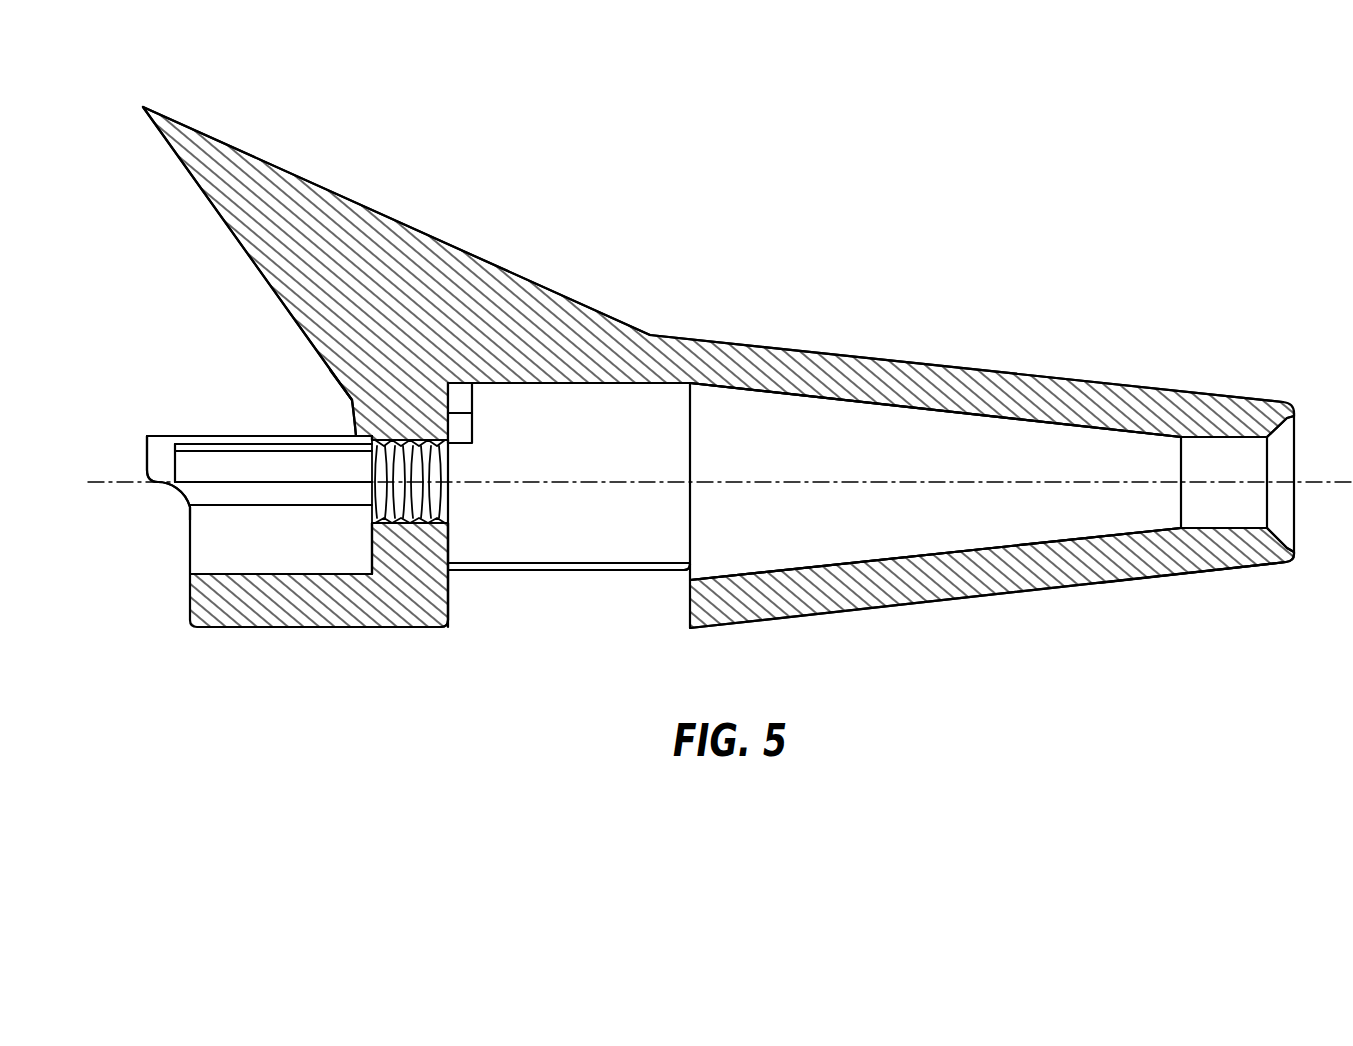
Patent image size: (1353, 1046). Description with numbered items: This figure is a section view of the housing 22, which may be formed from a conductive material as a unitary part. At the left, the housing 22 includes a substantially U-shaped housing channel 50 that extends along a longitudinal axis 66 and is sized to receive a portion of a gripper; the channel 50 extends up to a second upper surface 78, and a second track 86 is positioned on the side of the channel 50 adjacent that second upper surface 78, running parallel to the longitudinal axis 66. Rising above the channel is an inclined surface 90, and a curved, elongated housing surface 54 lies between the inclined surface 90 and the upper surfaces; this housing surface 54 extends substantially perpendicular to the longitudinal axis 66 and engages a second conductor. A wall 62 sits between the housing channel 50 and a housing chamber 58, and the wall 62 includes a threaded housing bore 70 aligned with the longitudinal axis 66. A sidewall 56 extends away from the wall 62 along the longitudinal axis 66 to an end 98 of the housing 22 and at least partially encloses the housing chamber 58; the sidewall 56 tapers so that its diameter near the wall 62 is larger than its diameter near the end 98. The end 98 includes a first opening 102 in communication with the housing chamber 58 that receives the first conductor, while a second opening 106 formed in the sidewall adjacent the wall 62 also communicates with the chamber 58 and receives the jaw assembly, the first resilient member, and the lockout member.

The housing 22 is at (884, 643).
The housing channel 50 is at (267, 537).
The housing surface 54 is at (355, 402).
The sidewall 56 is at (823, 367).
The housing chamber 58 is at (960, 517).
The wall 62 is at (400, 586).
The longitudinal axis 66 is at (1087, 480).
The housing bore 70 is at (437, 488).
The second upper surface 78 is at (168, 436).
The second track 86 is at (224, 492).
The inclined surface 90 is at (237, 233).
The end 98 is at (1213, 570).
The first opening 102 is at (1268, 455).
The second opening 106 is at (576, 590).